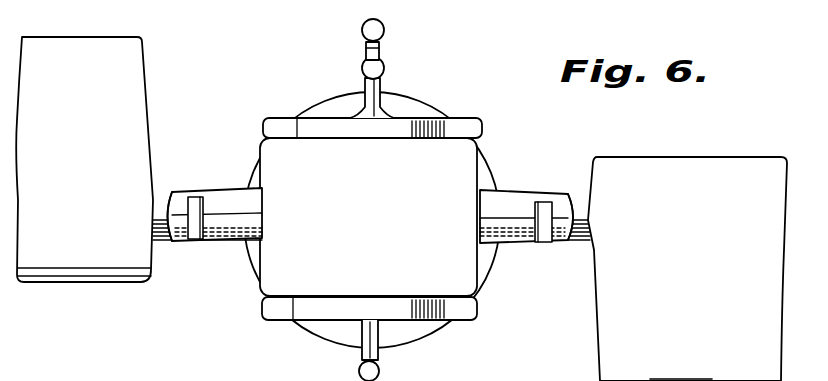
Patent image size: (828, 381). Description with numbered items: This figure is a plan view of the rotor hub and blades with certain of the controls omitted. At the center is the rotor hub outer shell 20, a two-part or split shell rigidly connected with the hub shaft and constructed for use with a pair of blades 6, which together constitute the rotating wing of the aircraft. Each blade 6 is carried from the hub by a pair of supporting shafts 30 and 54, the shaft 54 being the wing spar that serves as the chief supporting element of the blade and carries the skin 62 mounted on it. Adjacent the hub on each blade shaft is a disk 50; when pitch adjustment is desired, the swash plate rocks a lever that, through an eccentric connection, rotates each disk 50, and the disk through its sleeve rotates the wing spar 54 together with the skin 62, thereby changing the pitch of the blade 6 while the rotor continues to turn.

The rotating blade 6 is at (131, 56).
The rotor hub outer shell 20 is at (372, 200).
The supporting shaft 30 is at (537, 184).
The disk 50 is at (250, 208).
The wing spar 54 is at (158, 203).
The skin 62 is at (687, 269).